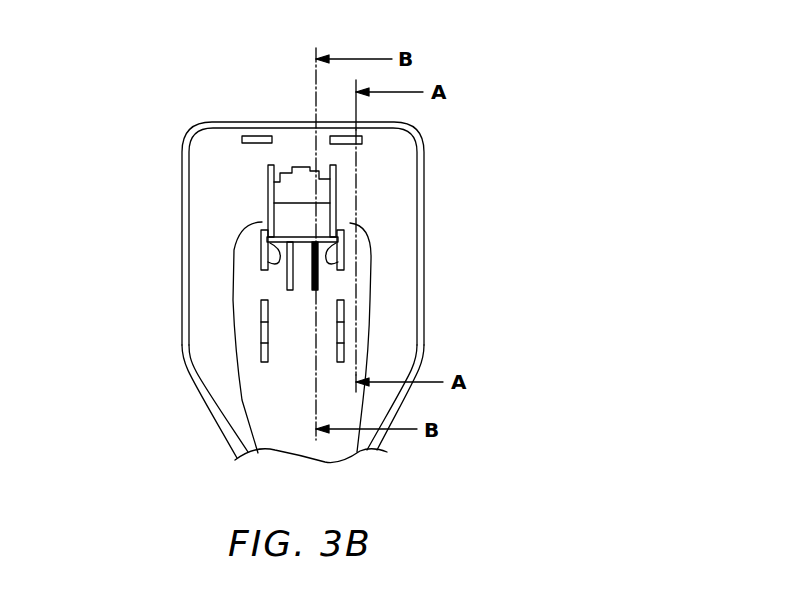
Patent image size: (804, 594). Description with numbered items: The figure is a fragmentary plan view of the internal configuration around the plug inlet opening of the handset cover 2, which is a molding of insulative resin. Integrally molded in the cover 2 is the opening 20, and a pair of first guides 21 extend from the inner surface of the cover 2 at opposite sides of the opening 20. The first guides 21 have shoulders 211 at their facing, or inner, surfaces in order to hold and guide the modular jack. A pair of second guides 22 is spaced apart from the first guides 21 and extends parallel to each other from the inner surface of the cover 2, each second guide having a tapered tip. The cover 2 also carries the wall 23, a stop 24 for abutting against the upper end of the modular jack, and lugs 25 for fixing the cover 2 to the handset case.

The handset cover 2 is at (423, 182).
The opening 20 is at (300, 167).
The first guides 21 is at (337, 221).
The shoulders 211 is at (260, 266).
The second guides 22 is at (343, 327).
The wall 23 is at (273, 204).
The stop 24 is at (287, 277).
The lugs 25 is at (247, 137).